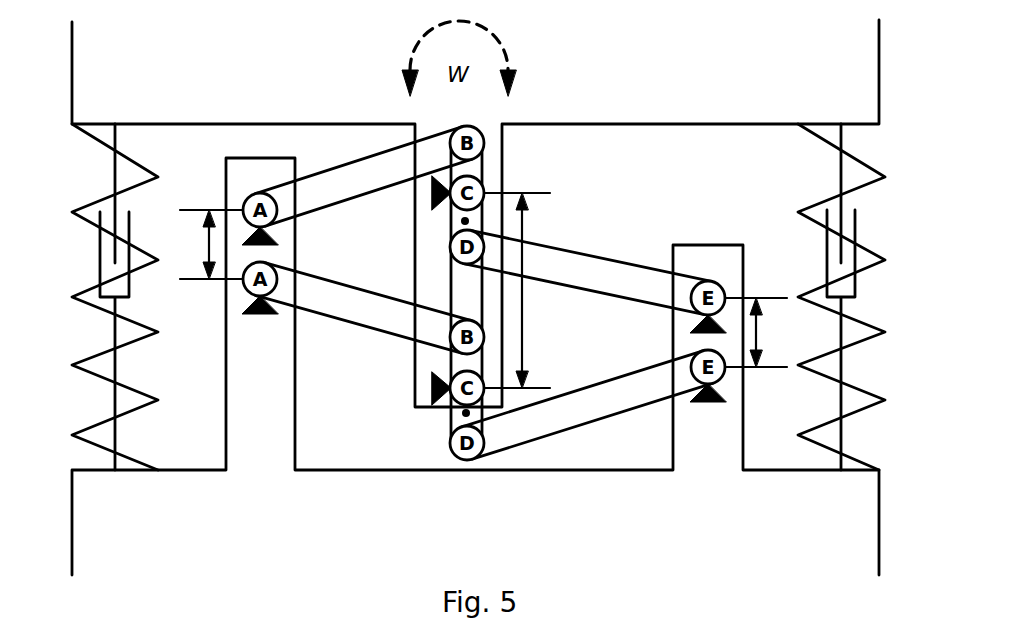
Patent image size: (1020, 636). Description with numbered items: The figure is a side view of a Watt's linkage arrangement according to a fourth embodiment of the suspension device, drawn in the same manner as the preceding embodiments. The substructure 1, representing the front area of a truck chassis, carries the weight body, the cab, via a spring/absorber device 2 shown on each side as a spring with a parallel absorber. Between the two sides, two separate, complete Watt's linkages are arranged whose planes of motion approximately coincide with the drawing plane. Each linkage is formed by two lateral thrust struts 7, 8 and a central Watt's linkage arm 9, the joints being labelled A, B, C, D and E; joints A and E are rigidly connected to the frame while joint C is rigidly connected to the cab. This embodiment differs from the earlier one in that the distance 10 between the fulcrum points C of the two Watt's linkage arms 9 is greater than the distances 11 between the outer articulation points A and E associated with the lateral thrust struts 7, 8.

The substructure 1 is at (671, 511).
The spring/absorber device 2 is at (122, 494).
The lateral thrust strut 7 is at (368, 173).
The lateral thrust strut 8 is at (547, 263).
The Watt's linkage arm 9 is at (465, 221).
The distance between fulcrum points C 10 is at (520, 290).
The distance of outer articulation points A, E 11 is at (486, 288).